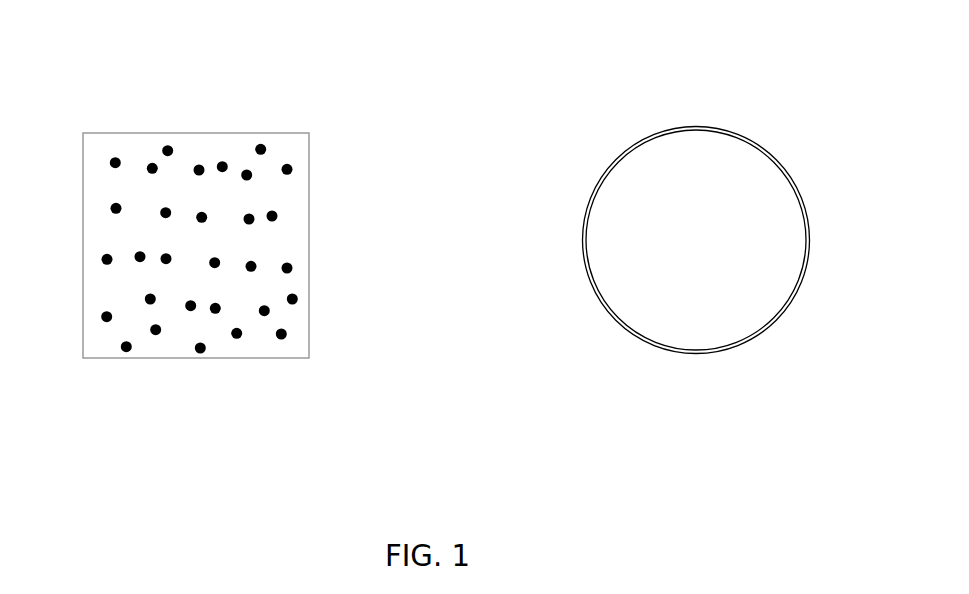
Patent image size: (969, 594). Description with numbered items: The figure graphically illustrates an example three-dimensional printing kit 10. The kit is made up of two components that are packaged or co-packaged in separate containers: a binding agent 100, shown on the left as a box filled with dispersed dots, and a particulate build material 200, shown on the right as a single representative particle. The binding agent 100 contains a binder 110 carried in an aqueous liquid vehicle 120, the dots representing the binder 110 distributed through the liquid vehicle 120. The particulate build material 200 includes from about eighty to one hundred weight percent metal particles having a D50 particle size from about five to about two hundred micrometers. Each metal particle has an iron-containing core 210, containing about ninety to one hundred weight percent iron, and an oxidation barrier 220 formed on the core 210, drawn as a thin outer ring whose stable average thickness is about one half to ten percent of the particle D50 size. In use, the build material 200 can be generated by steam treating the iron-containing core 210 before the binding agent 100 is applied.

The three-dimensional printing kit 10 is at (147, 63).
The binding agent 100 is at (240, 285).
The binder 110 is at (289, 266).
The aqueous liquid vehicle 120 is at (296, 184).
The particulate build material 200 is at (724, 283).
The iron-containing core 210 is at (718, 252).
The oxidation barrier 220 is at (805, 273).